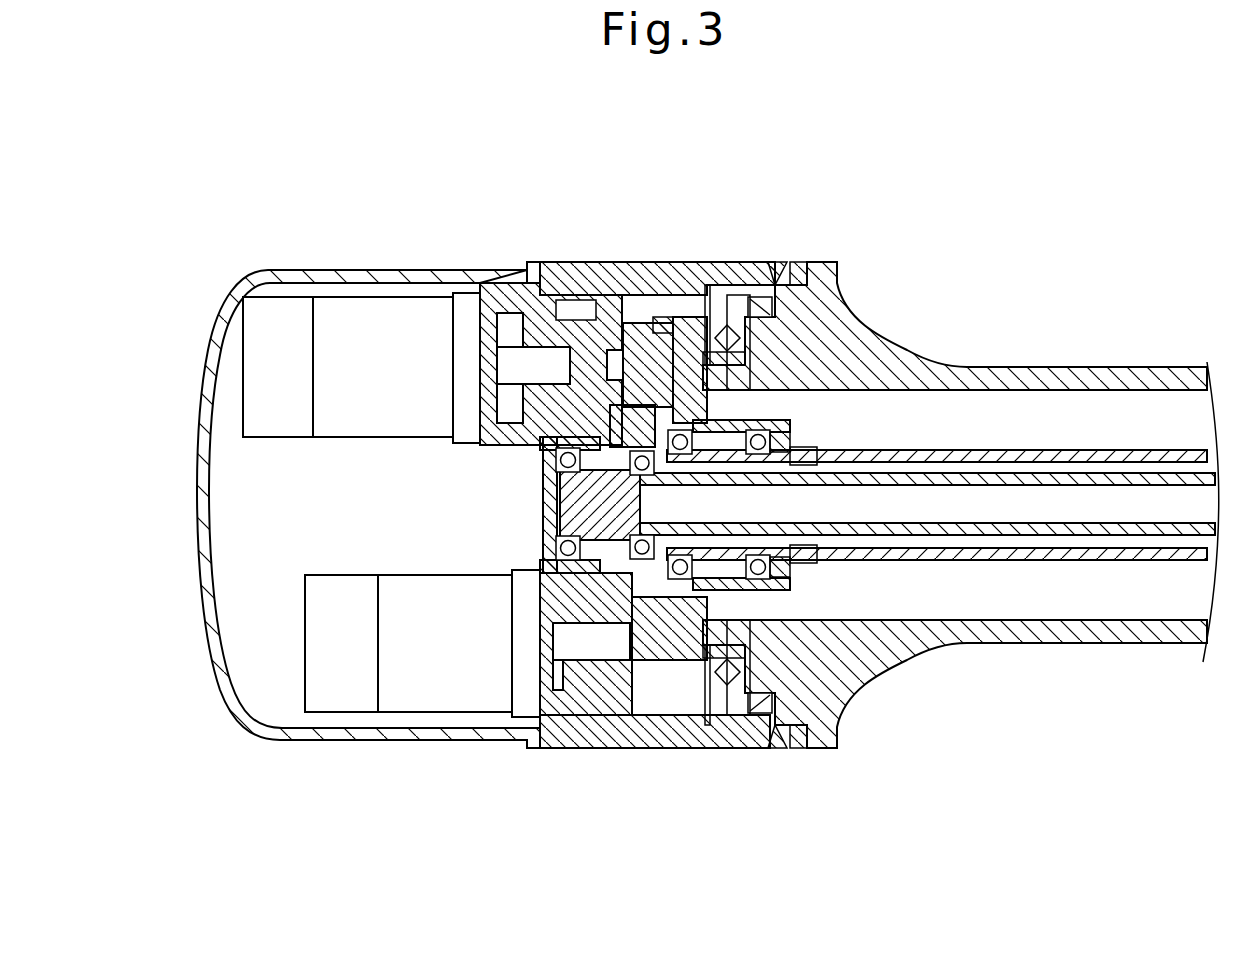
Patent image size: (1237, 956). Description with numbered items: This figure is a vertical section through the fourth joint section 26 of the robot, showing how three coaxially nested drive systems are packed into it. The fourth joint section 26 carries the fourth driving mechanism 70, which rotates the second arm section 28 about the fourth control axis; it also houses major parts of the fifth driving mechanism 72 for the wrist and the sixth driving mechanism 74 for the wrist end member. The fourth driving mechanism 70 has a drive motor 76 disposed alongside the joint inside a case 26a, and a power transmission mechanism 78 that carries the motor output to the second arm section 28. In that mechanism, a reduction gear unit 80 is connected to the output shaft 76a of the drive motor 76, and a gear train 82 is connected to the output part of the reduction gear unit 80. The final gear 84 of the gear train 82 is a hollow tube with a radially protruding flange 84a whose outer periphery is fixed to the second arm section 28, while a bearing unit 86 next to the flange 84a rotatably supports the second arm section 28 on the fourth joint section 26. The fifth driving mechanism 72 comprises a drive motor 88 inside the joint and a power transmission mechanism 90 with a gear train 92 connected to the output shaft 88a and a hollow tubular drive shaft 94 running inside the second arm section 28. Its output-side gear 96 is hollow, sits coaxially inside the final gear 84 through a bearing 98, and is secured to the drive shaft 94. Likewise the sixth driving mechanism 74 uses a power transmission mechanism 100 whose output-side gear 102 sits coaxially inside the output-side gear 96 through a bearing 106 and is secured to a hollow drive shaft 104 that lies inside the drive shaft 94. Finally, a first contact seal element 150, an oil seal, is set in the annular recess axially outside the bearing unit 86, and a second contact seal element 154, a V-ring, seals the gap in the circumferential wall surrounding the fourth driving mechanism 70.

The fourth joint section 26 is at (792, 202).
The case 26a is at (280, 742).
The second arm section 28 is at (1065, 372).
The fourth driving mechanism 70 is at (458, 286).
The fifth driving mechanism 72 is at (575, 590).
The sixth driving mechanism 74 is at (565, 514).
The drive motor 76 is at (415, 310).
The output shaft 76a is at (511, 357).
The power transmission mechanism 78 is at (576, 309).
The reduction gear unit 80 is at (573, 326).
The gear train 82 is at (643, 333).
The final gear 84 is at (720, 428).
The flange 84a is at (692, 370).
The bearing unit 86 is at (738, 300).
The drive motor 88 is at (473, 697).
The output shaft 88a is at (579, 650).
The power transmission mechanism 90 is at (692, 569).
The gear train 92 is at (608, 683).
The drive shaft 94 is at (845, 553).
The output-side gear 96 is at (708, 550).
The bearing 98 is at (750, 573).
The power transmission mechanism 100 is at (927, 615).
The output-side gear 102 is at (892, 527).
The drive shaft 104 is at (932, 530).
The bearing 106 is at (600, 497).
The first contact seal element 150 is at (778, 268).
The second contact seal element 154 is at (808, 262).